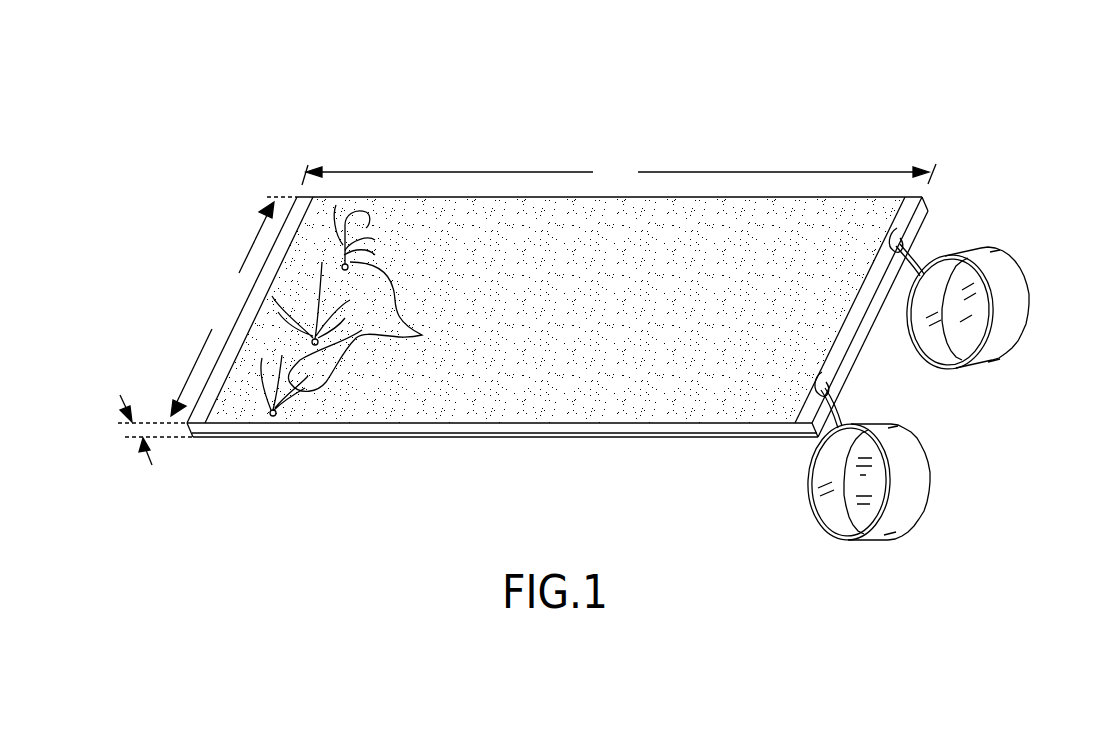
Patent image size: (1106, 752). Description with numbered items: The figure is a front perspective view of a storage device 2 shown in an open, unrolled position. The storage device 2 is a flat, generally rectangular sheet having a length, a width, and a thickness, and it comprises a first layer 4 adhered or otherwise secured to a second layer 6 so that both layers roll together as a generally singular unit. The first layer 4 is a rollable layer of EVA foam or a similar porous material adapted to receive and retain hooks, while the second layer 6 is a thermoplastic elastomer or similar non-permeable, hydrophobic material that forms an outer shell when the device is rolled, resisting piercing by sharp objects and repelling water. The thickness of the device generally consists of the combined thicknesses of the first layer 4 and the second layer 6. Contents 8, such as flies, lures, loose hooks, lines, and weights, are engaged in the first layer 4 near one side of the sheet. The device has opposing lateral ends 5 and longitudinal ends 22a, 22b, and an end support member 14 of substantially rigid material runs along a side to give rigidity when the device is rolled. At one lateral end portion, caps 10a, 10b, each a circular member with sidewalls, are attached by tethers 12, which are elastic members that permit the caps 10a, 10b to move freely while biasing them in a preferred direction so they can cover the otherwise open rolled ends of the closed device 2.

The storage device 2 is at (881, 128).
The first layer 4 is at (727, 215).
The lateral ends 5 is at (216, 388).
The second layer 6 is at (668, 438).
The contents 8 is at (420, 335).
The cap 10a is at (1022, 300).
The cap 10b is at (922, 491).
The tethers 12 is at (928, 245).
The end support member 14 is at (258, 275).
The longitudinal end 22a is at (534, 196).
The longitudinal end 22b is at (543, 440).